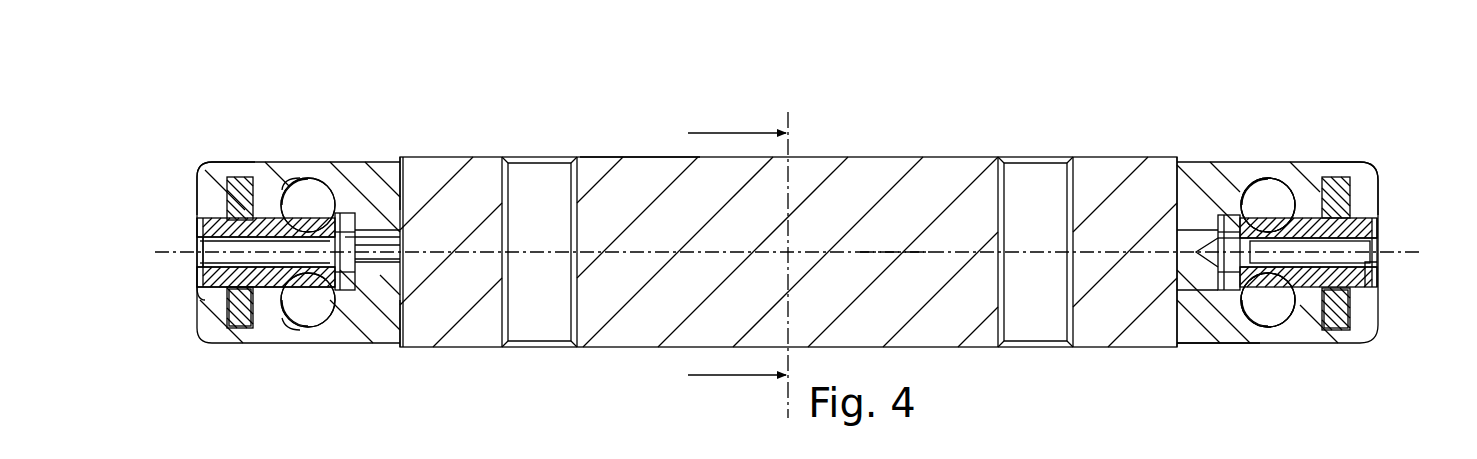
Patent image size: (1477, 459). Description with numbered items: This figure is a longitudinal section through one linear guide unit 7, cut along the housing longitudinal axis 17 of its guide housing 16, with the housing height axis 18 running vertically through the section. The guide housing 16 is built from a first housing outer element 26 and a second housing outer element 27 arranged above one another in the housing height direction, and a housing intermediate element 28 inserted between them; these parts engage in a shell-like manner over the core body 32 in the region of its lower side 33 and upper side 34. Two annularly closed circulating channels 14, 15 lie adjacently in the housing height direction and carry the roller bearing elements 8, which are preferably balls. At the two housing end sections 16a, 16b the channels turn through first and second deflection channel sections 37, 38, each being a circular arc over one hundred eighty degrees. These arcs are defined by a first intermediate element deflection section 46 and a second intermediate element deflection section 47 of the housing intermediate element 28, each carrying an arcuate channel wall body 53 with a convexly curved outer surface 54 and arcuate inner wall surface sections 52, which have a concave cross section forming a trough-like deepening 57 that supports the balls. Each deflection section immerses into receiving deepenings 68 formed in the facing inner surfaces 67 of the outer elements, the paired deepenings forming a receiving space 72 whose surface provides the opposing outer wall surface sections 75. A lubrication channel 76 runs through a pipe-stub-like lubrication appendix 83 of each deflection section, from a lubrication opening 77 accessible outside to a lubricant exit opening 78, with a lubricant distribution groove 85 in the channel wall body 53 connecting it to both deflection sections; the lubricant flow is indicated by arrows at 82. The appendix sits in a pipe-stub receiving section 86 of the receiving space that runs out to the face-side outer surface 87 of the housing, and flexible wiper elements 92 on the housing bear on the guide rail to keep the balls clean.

The linear guide unit 7 is at (1240, 150).
The roller bearing element 8 is at (1225, 178).
The circulating channel 14 is at (325, 292).
The circulating channel 15 is at (332, 212).
The guide housing 16 is at (1193, 350).
The housing end section 16a is at (222, 352).
The housing end section 16b is at (1356, 350).
The housing longitudinal axis 17 is at (892, 250).
The housing height axis 18 is at (788, 118).
The first housing outer element 26 is at (372, 330).
The second housing outer element 27 is at (388, 182).
The housing intermediate element 28 is at (263, 290).
The core body 32 is at (630, 325).
The lower side 33 is at (963, 352).
The upper side 34 is at (645, 152).
The first deflection channel section 37 is at (292, 194).
The second deflection channel section 38 is at (1284, 188).
The first intermediate element deflection section 46 is at (268, 198).
The second intermediate element deflection section 47 is at (1305, 196).
The inner wall surface section 52 is at (308, 216).
The arcuate channel wall body 53 is at (352, 228).
The convexly curved outer surface 54 is at (1225, 215).
The trough-like deepening 57 is at (338, 262).
The inner surface 67 is at (395, 240).
The receiving deepening 68 is at (200, 228).
The receiving space 72 is at (222, 180).
The outer wall surface section 75 is at (275, 192).
The lubrication channel 76 is at (205, 300).
The lubrication opening 77 is at (200, 267).
The lubricant exit opening 78 is at (362, 236).
The lubricant flow course 82 is at (200, 240).
The lubrication appendix 83 is at (246, 330).
The lubricant distribution groove 85 is at (385, 258).
The pipe-stub receiving section 86 is at (205, 250).
The face-side outer surface 87 is at (1395, 170).
The flexible wiper element 92 is at (243, 192).